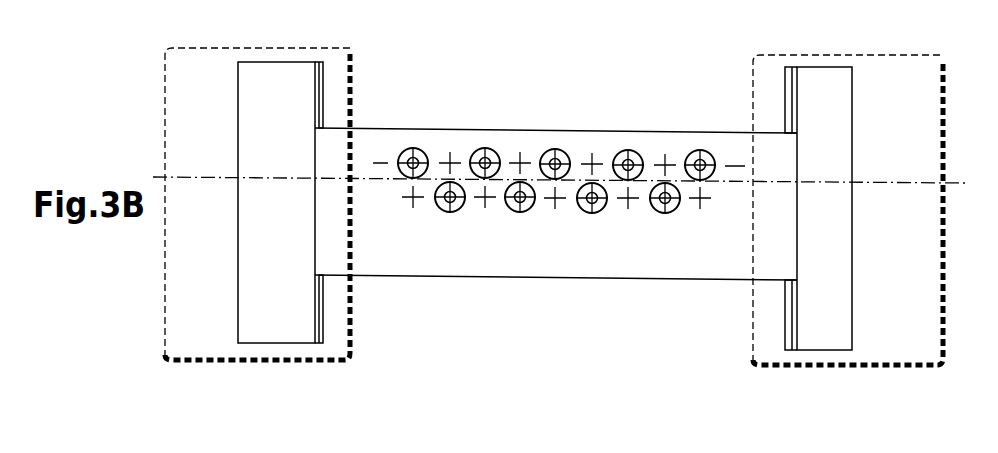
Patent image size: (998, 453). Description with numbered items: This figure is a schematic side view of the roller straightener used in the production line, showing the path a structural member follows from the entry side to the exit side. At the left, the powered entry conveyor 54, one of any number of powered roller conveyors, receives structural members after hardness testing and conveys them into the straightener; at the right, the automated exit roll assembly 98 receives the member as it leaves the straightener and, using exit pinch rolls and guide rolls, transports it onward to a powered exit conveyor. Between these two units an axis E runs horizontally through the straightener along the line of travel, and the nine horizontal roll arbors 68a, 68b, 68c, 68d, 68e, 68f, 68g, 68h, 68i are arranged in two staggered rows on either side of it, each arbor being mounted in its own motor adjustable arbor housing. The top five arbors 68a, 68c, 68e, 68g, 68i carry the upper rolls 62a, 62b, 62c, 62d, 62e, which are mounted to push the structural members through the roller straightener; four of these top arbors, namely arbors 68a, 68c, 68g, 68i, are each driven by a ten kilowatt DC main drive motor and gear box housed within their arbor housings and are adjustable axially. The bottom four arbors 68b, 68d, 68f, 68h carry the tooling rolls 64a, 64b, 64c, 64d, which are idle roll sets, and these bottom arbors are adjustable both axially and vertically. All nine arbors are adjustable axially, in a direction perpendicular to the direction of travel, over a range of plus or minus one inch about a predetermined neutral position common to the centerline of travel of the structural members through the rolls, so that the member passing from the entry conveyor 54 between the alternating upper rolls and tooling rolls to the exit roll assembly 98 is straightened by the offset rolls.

The entry conveyor 54 is at (213, 47).
The exit roll assembly 98 is at (905, 55).
The axis E is at (890, 183).
The upper roll 62a is at (421, 100).
The upper roll 62b is at (505, 101).
The upper roll 62c is at (581, 102).
The upper roll 62d is at (657, 103).
The upper roll 62e is at (741, 97).
The tooling roll 64a is at (425, 250).
The tooling roll 64b is at (505, 250).
The tooling roll 64c is at (605, 258).
The tooling roll 64d is at (687, 253).
The horizontal roll arbor 68a is at (409, 159).
The horizontal roll arbor 68b is at (452, 203).
The horizontal roll arbor 68c is at (481, 159).
The horizontal roll arbor 68d is at (522, 203).
The horizontal roll arbor 68e is at (551, 160).
The horizontal roll arbor 68f is at (586, 203).
The horizontal roll arbor 68g is at (624, 161).
The horizontal roll arbor 68h is at (660, 204).
The horizontal roll arbor 68i is at (696, 161).